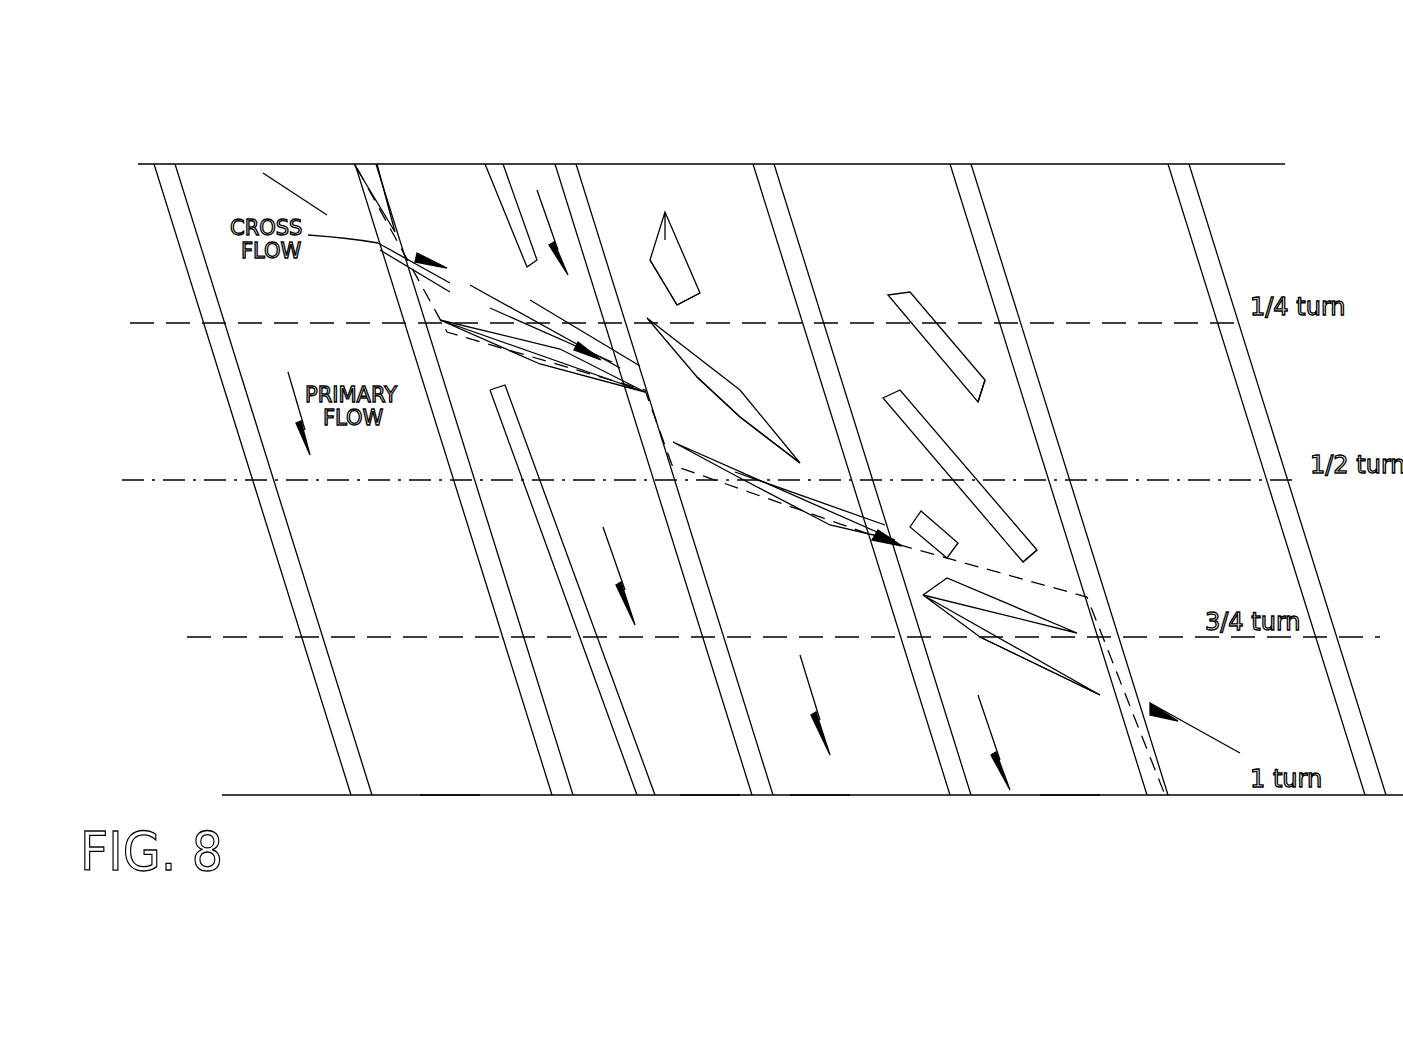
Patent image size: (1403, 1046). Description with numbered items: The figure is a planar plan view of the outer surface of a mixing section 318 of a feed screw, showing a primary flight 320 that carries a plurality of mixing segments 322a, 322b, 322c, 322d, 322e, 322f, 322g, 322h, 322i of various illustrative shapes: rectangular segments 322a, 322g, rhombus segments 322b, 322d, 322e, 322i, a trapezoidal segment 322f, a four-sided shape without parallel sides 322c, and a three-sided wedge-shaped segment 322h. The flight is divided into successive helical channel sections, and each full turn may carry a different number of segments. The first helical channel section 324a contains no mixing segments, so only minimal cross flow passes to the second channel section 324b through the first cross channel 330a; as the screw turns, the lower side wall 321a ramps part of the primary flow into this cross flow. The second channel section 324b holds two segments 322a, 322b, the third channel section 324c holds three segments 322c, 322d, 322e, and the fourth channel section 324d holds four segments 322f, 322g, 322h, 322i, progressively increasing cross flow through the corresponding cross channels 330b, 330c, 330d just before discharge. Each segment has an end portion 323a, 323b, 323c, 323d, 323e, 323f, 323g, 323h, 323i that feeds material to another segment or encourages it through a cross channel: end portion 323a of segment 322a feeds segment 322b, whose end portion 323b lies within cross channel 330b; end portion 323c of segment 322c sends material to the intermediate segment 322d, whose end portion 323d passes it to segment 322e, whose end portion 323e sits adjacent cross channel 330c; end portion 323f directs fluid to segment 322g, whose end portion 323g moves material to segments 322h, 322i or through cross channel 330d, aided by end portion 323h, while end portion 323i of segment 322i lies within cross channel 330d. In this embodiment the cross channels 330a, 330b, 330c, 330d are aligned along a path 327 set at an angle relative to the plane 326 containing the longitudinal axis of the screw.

The mixing section 318 is at (735, 135).
The primary flight 320 is at (565, 175).
The lower side wall 321a is at (400, 286).
The mixing segment 322a is at (525, 470).
The mixing segment 322b is at (525, 350).
The mixing segment 322c is at (665, 240).
The mixing segment 322d is at (700, 365).
The mixing segment 322e is at (730, 470).
The mixing segment 322f is at (930, 345).
The mixing segment 322g is at (935, 443).
The mixing segment 322h is at (958, 537).
The mixing segment 322i is at (1023, 652).
The end portion 323a is at (515, 222).
The end portion 323b is at (625, 385).
The end portion 323c is at (678, 298).
The end portion 323d is at (752, 425).
The end portion 323e is at (848, 523).
The end portion 323f is at (975, 372).
The end portion 323g is at (1013, 530).
The end portion 323h is at (1025, 595).
The end portion 323i is at (1083, 687).
The first helical channel section 324a is at (447, 783).
The second channel section 324b is at (707, 783).
The third channel section 324c is at (816, 783).
The fourth channel section 324d is at (1068, 783).
The plane 326 is at (228, 480).
The path 327 is at (300, 195).
The first cross channel 330a is at (384, 243).
The cross channel 330b is at (460, 285).
The cross channel 330c is at (873, 535).
The cross channel 330d is at (1128, 687).